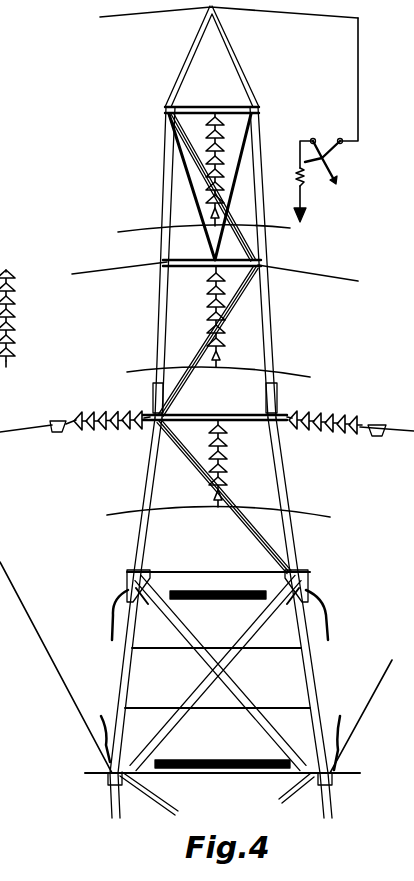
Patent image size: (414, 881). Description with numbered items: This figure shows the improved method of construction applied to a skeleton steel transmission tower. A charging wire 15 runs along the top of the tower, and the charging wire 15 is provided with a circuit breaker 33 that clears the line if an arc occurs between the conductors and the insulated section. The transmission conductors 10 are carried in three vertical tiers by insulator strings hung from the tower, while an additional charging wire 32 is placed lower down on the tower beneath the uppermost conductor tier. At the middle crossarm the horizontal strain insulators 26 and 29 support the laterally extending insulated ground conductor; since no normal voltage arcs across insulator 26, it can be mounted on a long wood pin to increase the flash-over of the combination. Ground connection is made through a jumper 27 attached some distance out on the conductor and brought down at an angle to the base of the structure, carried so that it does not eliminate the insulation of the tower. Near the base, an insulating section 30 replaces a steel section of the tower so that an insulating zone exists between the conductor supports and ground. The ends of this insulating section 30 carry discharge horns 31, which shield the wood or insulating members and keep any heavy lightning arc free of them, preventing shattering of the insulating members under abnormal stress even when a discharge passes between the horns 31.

The charging wire 15 is at (165, 18).
The circuit breaker 33 is at (331, 120).
The transmission line conductor 10 is at (150, 228).
The additional charging wire 32 is at (128, 272).
The insulator 26 is at (117, 405).
The strain insulator 29 is at (328, 418).
The insulating section 30 is at (128, 676).
The discharge horns 31 is at (112, 621).
The jumper 27 is at (199, 657).